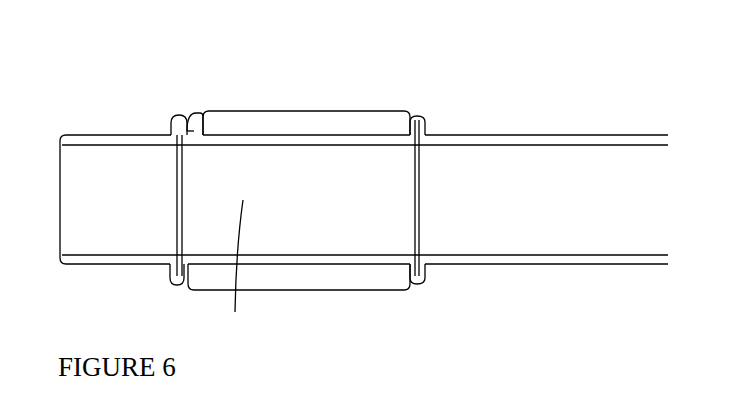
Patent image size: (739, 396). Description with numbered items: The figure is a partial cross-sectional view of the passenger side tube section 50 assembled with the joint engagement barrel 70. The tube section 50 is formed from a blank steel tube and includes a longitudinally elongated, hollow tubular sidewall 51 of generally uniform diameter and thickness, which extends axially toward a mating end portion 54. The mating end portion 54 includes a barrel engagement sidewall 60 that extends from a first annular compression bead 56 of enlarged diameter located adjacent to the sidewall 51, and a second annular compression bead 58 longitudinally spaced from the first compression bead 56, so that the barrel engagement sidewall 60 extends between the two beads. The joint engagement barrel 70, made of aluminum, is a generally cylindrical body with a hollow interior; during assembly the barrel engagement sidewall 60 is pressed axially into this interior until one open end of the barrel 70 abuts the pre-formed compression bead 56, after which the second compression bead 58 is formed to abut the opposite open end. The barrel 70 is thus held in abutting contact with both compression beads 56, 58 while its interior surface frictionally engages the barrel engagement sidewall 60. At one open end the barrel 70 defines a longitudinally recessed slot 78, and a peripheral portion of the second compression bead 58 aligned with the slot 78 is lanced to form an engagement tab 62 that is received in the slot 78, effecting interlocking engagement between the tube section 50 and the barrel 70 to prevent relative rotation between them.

The passenger side tube section 50 is at (513, 110).
The tubular sidewall 51 is at (605, 260).
The mating end portion 54 is at (233, 268).
The first annular compression bead 56 is at (424, 275).
The second annular compression bead 58 is at (178, 272).
The barrel engagement sidewall 60 is at (285, 145).
The engagement tab 62 is at (185, 128).
The joint engagement barrel 70 is at (357, 123).
The recessed slot 78 is at (200, 128).